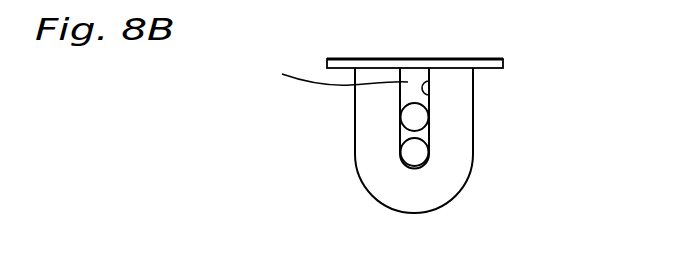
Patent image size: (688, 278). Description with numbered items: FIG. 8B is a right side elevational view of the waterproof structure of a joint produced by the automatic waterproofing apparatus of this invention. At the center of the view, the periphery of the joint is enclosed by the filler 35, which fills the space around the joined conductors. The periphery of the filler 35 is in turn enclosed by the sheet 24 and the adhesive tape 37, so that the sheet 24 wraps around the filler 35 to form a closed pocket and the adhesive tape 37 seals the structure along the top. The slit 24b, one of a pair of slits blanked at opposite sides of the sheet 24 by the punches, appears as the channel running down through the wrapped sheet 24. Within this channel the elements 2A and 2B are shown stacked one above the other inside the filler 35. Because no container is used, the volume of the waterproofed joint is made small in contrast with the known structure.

The sheet 24 is at (363, 130).
The slit 24b is at (425, 97).
The filler 35 is at (330, 66).
The adhesive tape 37 is at (425, 59).
The first ball / element 2A is at (420, 153).
The second ball / element 2B is at (420, 118).